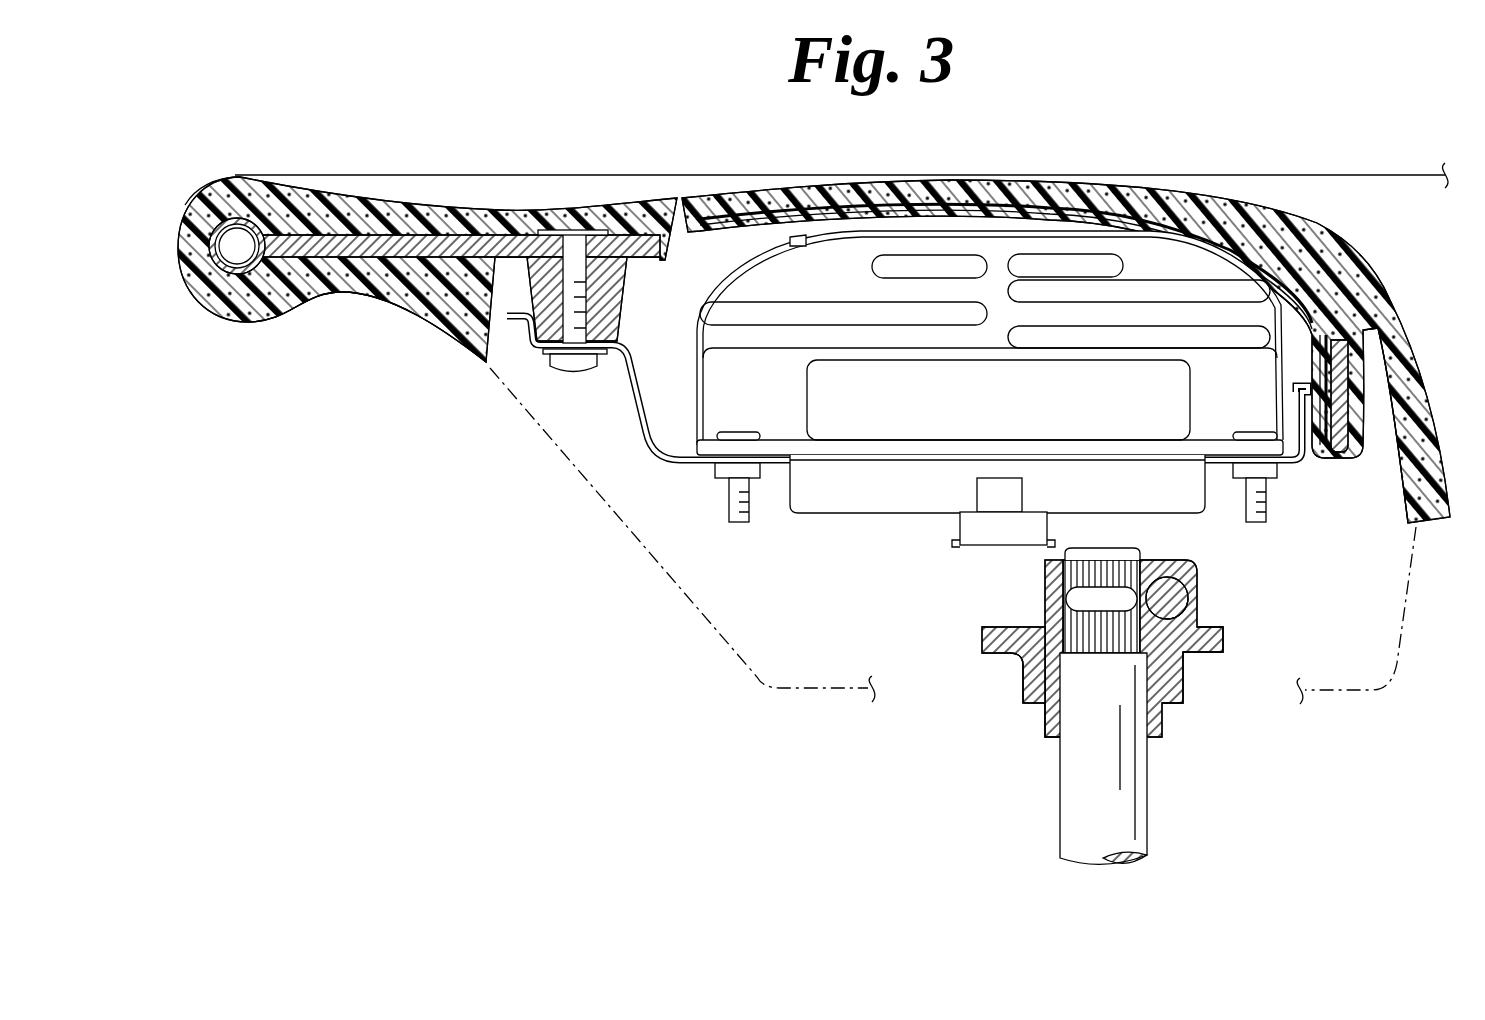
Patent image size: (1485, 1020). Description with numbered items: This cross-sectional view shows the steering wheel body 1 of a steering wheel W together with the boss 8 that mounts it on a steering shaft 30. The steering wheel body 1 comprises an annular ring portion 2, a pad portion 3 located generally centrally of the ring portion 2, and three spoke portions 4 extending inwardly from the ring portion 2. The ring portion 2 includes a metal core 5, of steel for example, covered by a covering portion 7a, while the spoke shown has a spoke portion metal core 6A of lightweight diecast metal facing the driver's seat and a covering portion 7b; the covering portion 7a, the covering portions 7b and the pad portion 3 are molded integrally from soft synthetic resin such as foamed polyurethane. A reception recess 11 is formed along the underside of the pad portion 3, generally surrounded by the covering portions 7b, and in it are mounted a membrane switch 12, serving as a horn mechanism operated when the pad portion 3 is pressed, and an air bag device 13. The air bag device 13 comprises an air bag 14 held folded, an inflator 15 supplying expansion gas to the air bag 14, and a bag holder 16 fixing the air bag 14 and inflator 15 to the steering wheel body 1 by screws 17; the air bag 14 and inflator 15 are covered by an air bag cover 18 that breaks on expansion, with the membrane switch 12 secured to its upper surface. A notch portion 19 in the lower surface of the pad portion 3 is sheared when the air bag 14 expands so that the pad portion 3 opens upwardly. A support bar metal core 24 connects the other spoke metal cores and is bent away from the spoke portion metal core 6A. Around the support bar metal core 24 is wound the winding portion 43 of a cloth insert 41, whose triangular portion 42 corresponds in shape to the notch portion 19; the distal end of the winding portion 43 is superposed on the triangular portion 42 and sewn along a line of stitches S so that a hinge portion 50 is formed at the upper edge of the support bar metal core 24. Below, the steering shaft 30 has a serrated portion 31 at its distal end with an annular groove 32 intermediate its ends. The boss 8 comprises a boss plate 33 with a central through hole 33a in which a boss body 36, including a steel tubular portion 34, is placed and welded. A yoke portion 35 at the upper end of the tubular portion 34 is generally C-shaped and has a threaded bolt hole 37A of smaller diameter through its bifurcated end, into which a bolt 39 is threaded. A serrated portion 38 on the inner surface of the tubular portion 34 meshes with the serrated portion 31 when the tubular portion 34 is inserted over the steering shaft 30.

The steering wheel body 1 is at (531, 157).
The ring portion 2 is at (228, 178).
The pad portion 3 is at (913, 179).
The spoke portions 4 is at (386, 197).
The metal core 5 is at (198, 294).
The spoke portion metal core 6A is at (370, 290).
The covering portion 7a is at (205, 200).
The covering portions 7b is at (303, 300).
The boss 8 is at (978, 720).
The reception recess 11 is at (681, 278).
The membrane switch 12 is at (813, 232).
The air bag device 13 is at (683, 328).
The air bag 14 is at (838, 302).
The inflator 15 is at (805, 387).
The bag holder 16 is at (646, 437).
The screws 17 is at (567, 376).
The air bag cover 18 is at (694, 410).
The notch portion 19 is at (683, 200).
The support bar metal core 24 is at (1340, 456).
The steering shaft 30 is at (1150, 815).
The serrated portion 31 is at (1050, 600).
The annular groove 32 is at (1110, 590).
The boss plate 33 is at (1225, 640).
The through hole 33a is at (1184, 685).
The tubular portion 34 is at (1046, 735).
The yoke portion 35 is at (1190, 560).
The boss body 36 is at (1183, 722).
The bolt hole 37A is at (1190, 589).
The serrated portion 38 is at (1024, 670).
The bolt 39 is at (1186, 606).
The cloth insert 41 is at (974, 207).
The triangular portion 42 is at (1225, 255).
The winding portion 43 is at (1322, 268).
The hinge portion 50 is at (1248, 244).
The line of stitches S is at (1113, 212).
The steering wheel W is at (1200, 128).